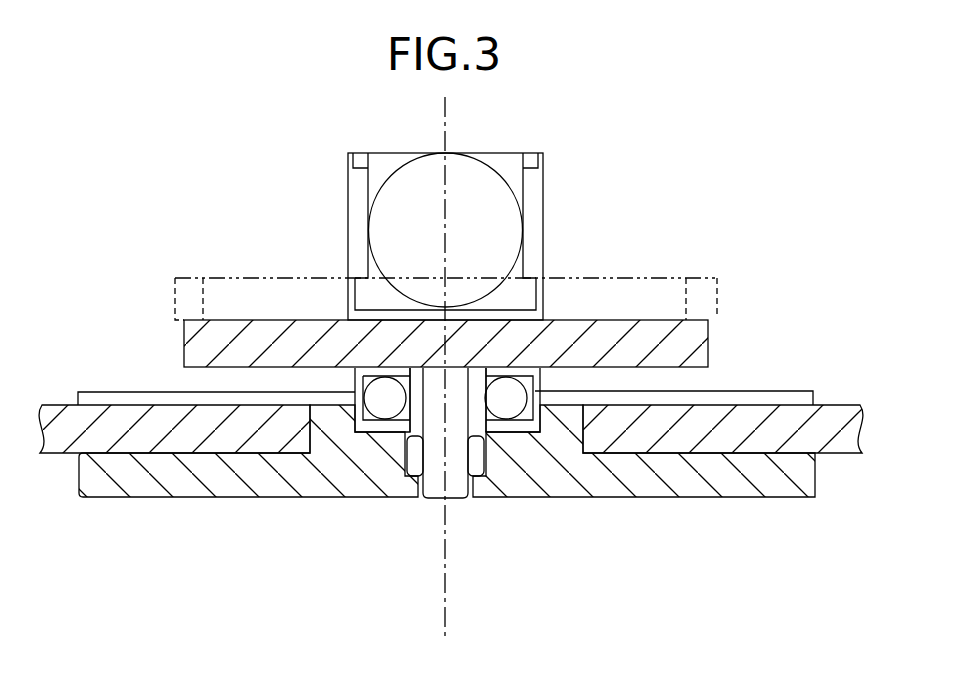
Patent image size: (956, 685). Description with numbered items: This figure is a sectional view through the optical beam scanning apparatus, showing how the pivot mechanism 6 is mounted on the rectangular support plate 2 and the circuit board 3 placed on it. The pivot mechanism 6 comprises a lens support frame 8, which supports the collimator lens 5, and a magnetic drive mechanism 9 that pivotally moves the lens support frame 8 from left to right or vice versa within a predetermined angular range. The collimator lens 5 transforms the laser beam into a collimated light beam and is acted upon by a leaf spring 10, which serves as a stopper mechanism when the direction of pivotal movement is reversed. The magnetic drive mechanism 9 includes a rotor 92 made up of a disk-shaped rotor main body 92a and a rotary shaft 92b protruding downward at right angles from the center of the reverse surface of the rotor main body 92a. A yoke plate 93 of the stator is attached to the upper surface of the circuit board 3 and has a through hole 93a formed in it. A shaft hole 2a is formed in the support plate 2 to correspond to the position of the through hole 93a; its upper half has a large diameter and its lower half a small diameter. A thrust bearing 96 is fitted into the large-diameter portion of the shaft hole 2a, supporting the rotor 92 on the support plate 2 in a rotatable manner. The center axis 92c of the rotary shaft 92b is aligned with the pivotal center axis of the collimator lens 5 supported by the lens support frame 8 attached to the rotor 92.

The support plate 2 is at (112, 482).
The shaft hole 2a is at (428, 440).
The circuit board 3 is at (68, 404).
The collimator lens 5 is at (403, 219).
The pivot mechanism 6 is at (642, 170).
The lens support frame 8 is at (544, 188).
The magnetic drive mechanism 9 is at (445, 215).
The leaf spring 10 is at (226, 266).
The rotor 92 is at (704, 292).
The rotor main body 92a is at (697, 328).
The rotary shaft 92b is at (455, 482).
The center axis 92c is at (447, 620).
The yoke plate 93 is at (797, 392).
The through hole 93a is at (367, 400).
The thrust bearing 96 is at (540, 382).